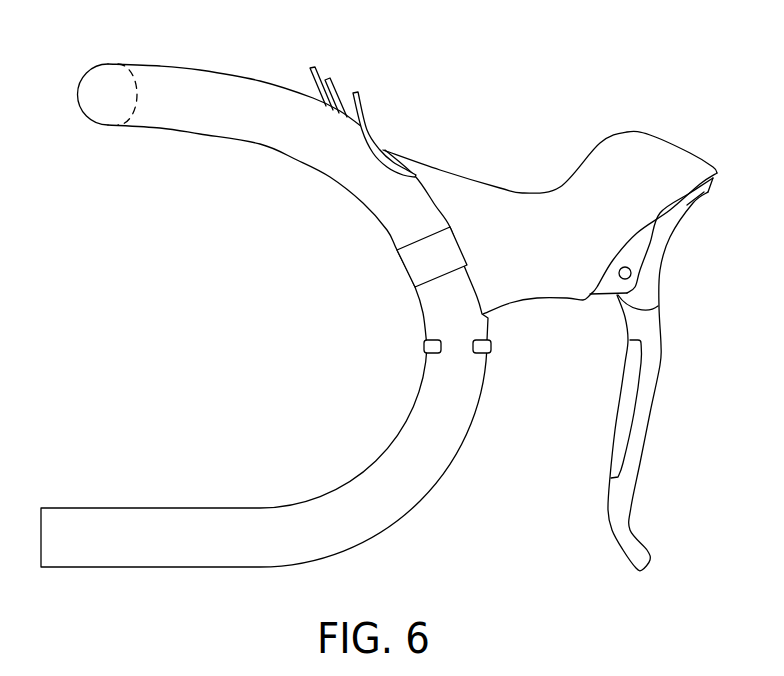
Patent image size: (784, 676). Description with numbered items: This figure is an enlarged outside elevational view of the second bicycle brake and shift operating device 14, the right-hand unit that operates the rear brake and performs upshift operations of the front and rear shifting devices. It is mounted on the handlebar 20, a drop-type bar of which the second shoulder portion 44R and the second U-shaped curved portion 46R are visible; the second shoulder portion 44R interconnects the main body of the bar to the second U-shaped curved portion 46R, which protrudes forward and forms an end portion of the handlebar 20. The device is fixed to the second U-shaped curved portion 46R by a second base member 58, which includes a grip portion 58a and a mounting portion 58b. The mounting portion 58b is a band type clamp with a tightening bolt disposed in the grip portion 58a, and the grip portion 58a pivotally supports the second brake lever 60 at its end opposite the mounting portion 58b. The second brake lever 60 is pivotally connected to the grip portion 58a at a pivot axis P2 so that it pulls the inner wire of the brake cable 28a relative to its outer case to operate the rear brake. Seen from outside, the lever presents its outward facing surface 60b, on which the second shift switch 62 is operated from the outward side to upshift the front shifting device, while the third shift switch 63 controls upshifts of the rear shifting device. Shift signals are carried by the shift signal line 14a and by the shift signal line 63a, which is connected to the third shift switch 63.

The second bicycle brake and shift operating device 14 is at (560, 319).
The shift signal line 14a is at (333, 92).
The handlebar 20 is at (208, 134).
The brake cable 28a is at (367, 117).
The second shoulder portion 44R is at (80, 83).
The second U-shaped curved portion 46R is at (363, 472).
The second base member 58 is at (550, 190).
The grip portion 58a is at (503, 190).
The mounting portion 58b is at (442, 227).
The second brake lever 60 is at (650, 374).
The outward facing surface 60b is at (650, 326).
The second shift switch 62 is at (632, 388).
The third shift switch 63 is at (424, 345).
The shift signal line 63a is at (310, 80).
The pivot axis P2 is at (632, 272).